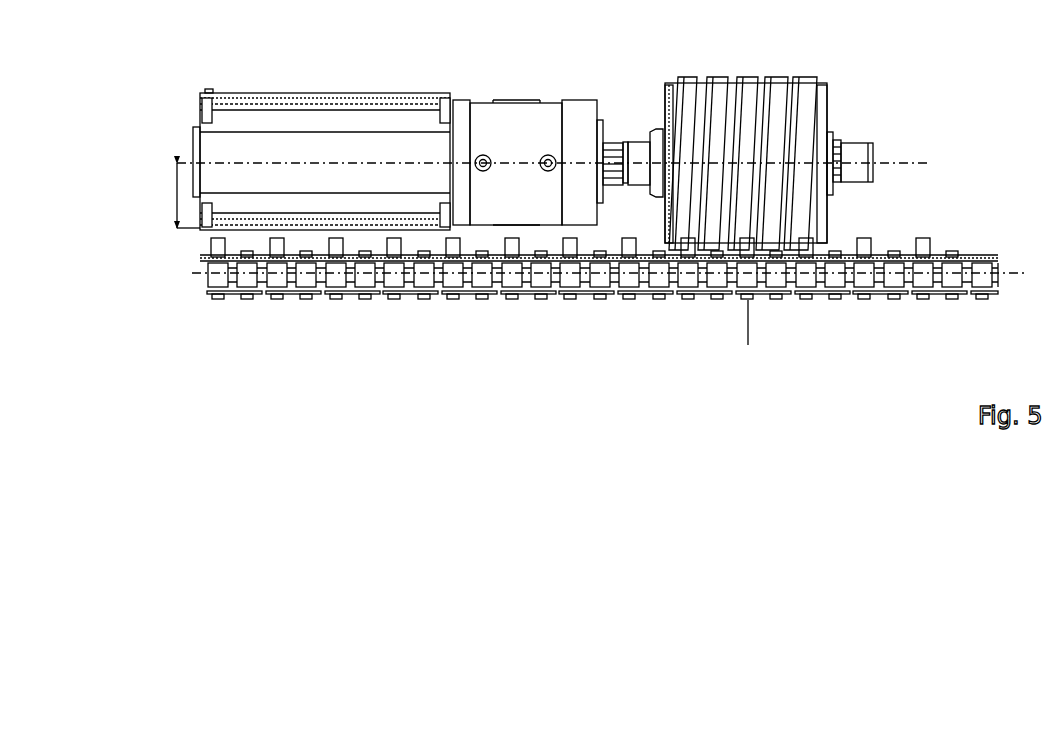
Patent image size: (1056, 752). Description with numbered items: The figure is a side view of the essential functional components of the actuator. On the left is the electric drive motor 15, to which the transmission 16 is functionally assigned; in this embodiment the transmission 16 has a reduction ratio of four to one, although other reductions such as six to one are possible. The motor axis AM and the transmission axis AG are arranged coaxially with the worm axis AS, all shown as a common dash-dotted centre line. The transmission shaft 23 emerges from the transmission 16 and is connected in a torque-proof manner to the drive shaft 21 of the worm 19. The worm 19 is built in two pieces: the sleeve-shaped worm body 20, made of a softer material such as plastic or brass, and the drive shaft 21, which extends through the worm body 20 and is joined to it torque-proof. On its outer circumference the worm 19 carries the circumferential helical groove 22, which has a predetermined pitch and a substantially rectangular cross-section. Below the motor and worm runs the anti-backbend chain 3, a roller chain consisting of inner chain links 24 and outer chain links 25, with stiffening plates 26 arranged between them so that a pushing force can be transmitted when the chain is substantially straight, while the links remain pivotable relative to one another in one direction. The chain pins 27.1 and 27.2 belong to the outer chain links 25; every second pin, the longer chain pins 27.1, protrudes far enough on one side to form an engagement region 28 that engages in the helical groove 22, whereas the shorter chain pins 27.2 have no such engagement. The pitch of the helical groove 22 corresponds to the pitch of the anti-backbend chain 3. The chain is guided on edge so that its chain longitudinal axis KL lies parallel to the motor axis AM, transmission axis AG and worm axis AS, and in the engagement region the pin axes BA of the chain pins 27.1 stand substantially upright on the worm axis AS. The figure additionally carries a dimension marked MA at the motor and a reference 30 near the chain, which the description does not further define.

The anti-backbend chain 3 is at (618, 282).
The electric drive motor 15 is at (368, 120).
The transmission 16 is at (492, 132).
The worm 19 is at (748, 127).
The worm body 20 is at (805, 80).
The drive shaft 21 is at (852, 157).
The helical groove 22 is at (701, 78).
The transmission shaft 23 is at (612, 145).
The inner chain links 24 is at (983, 288).
The outer chain links 25 is at (942, 283).
The stiffening plates 26 is at (912, 285).
The chain pins 27.1 is at (925, 240).
The chain pins 27.2 is at (960, 257).
The engagement region 28 is at (932, 250).
The chain guide 30 is at (960, 304).
The motor axis AM is at (264, 163).
The transmission axis AG is at (520, 163).
The worm axis AS is at (897, 163).
The motor dimension MA is at (174, 199).
The pin axes BA is at (716, 325).
The chain longitudinal axis KL is at (1025, 273).